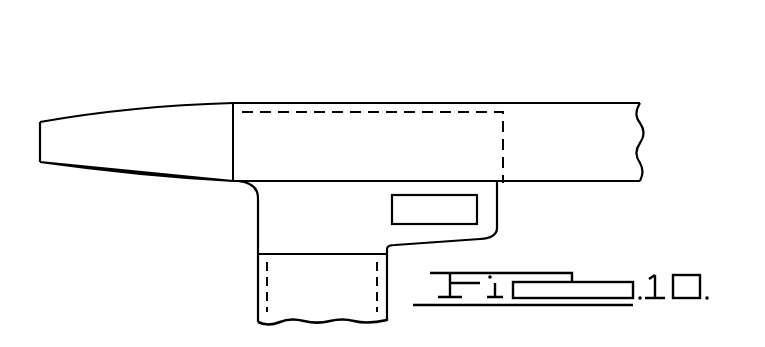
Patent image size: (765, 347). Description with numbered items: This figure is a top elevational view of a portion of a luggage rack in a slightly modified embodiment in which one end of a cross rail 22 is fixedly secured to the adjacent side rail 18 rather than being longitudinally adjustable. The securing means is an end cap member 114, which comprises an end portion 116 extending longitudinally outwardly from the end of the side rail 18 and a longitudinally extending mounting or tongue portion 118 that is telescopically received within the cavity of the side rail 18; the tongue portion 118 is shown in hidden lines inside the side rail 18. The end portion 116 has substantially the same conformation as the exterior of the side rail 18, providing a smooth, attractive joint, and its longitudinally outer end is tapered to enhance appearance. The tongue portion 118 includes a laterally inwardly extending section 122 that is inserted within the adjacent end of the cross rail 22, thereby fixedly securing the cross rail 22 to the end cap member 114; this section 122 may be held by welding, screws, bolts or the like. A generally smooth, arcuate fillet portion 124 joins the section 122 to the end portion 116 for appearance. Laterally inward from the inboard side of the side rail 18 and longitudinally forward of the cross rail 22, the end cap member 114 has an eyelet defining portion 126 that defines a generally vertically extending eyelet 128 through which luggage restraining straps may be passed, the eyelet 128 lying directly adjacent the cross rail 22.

The end cap member 114 is at (195, 100).
The end portion 116 is at (103, 127).
The side rail 18 is at (548, 105).
The tongue portion 118 is at (382, 126).
The fillet portion 124 is at (254, 185).
The cross rail 22 is at (257, 282).
The laterally inwardly extending section 122 is at (267, 303).
The eyelet 128 is at (446, 229).
The eyelet defining portion 126 is at (490, 208).